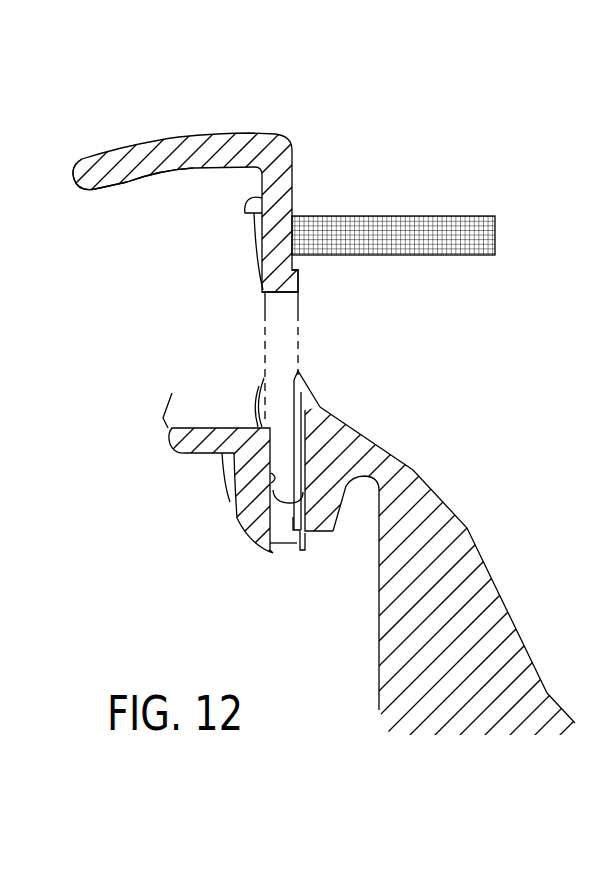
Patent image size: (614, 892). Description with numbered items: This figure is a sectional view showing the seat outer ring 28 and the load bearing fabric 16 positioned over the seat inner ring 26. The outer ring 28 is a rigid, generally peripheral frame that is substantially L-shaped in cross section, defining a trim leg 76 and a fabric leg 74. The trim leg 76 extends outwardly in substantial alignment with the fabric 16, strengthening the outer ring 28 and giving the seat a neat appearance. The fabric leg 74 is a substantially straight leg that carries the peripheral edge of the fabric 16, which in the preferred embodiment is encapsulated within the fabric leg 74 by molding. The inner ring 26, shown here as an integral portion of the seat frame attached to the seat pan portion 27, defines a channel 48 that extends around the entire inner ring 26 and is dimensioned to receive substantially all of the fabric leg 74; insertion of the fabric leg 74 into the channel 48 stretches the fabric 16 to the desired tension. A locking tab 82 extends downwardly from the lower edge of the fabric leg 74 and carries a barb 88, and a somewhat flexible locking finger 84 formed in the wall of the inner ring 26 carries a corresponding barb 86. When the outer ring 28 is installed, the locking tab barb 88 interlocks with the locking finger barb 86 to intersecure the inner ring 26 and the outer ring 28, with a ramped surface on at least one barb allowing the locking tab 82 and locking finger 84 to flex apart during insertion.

The load bearing fabric 16 is at (408, 212).
The inner ring 26 is at (467, 528).
The seat pan portion 27 is at (546, 695).
The outer ring 28 is at (229, 172).
The channel 48 is at (277, 485).
The fabric leg 74 is at (292, 195).
The trim leg 76 is at (128, 175).
The locking tab 82 is at (263, 288).
The locking finger 84 is at (330, 546).
The locking finger barb 86 is at (286, 546).
The locking tab barb 88 is at (298, 285).